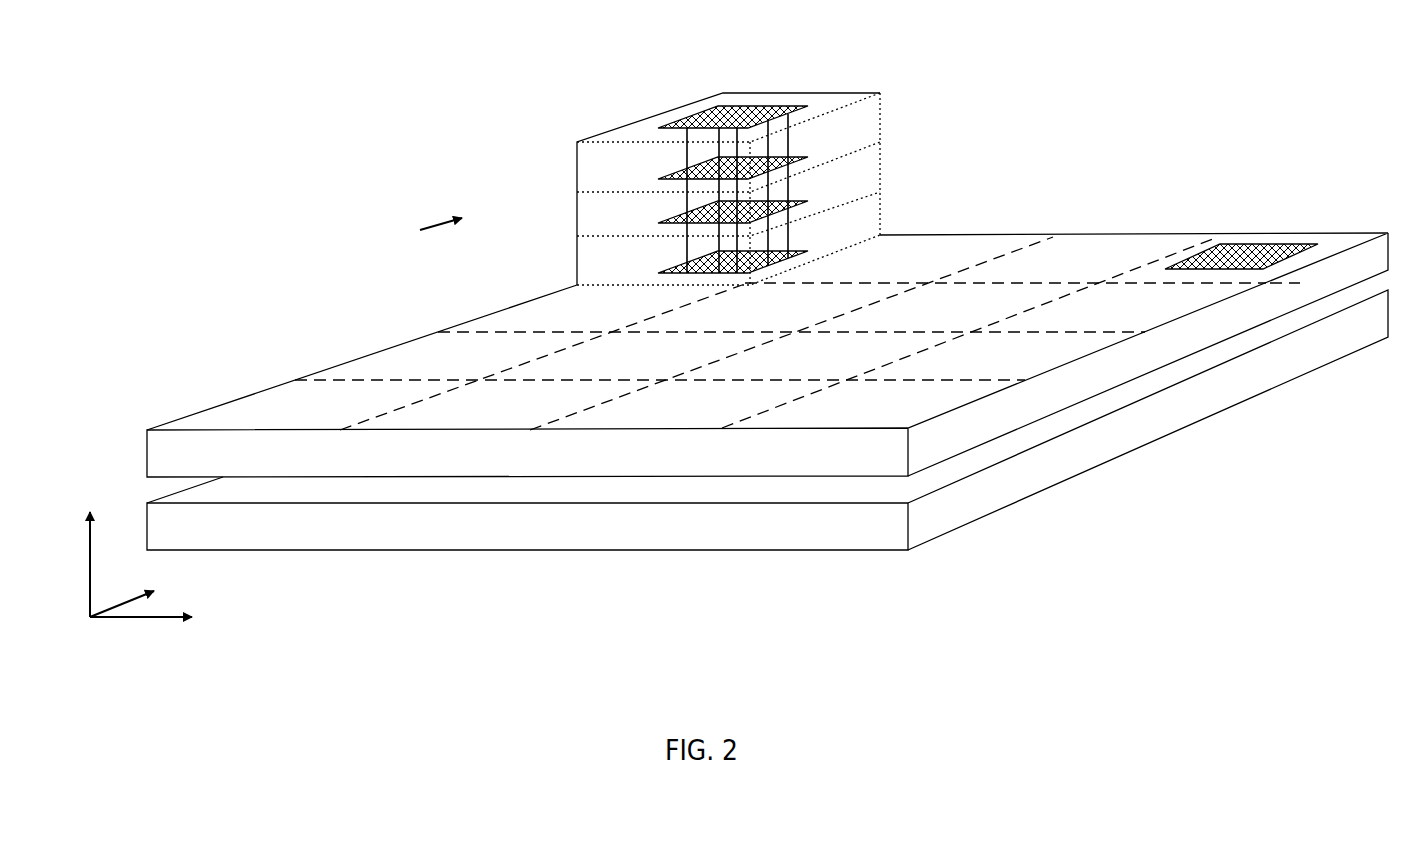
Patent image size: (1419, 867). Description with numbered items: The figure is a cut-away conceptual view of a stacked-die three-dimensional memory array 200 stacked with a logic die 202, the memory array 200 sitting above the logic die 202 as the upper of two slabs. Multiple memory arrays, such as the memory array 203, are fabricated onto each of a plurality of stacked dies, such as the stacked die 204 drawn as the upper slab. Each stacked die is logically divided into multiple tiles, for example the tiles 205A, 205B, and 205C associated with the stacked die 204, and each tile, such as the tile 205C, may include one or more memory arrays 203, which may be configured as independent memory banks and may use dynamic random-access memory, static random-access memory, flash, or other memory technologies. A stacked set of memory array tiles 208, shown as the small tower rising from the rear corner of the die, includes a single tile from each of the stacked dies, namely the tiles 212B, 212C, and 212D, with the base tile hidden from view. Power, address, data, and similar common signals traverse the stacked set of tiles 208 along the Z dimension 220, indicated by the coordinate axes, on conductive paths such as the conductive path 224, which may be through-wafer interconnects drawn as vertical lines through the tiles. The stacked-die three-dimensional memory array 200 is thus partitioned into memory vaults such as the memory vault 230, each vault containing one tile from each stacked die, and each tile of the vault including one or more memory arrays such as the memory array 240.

The stacked-die 3D memory array 200 is at (131, 73).
The logic die 202 is at (1048, 463).
The memory array 203 is at (1249, 240).
The stacked die 204 is at (1153, 350).
The tile 205A is at (962, 248).
The tile 205B is at (1070, 249).
The tile 205C is at (1342, 243).
The stacked set of memory array tiles 208 is at (882, 62).
The tile 212B is at (882, 214).
The tile 212C is at (882, 170).
The tile 212D is at (882, 119).
The Z dimension 220 is at (94, 477).
The conductive path 224 is at (687, 157).
The memory vault 230 is at (421, 231).
The memory array 240 is at (768, 107).